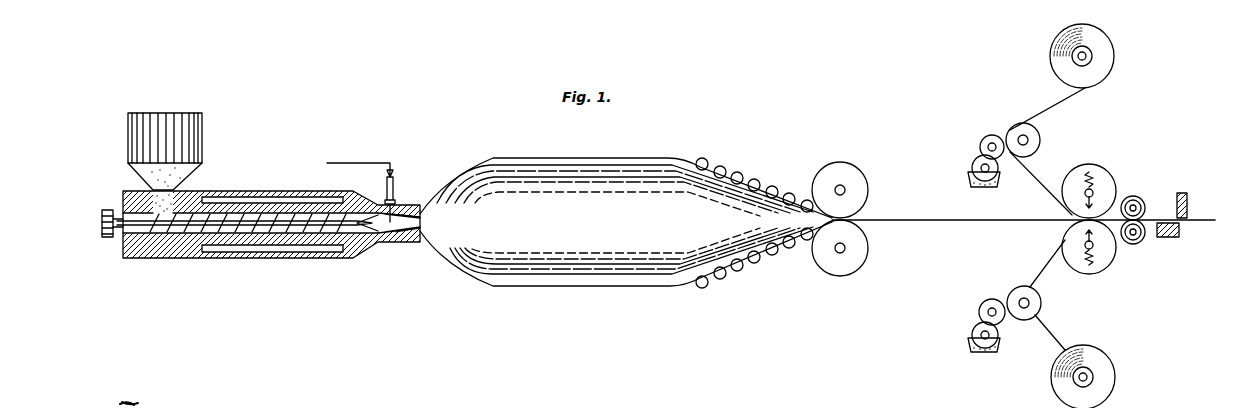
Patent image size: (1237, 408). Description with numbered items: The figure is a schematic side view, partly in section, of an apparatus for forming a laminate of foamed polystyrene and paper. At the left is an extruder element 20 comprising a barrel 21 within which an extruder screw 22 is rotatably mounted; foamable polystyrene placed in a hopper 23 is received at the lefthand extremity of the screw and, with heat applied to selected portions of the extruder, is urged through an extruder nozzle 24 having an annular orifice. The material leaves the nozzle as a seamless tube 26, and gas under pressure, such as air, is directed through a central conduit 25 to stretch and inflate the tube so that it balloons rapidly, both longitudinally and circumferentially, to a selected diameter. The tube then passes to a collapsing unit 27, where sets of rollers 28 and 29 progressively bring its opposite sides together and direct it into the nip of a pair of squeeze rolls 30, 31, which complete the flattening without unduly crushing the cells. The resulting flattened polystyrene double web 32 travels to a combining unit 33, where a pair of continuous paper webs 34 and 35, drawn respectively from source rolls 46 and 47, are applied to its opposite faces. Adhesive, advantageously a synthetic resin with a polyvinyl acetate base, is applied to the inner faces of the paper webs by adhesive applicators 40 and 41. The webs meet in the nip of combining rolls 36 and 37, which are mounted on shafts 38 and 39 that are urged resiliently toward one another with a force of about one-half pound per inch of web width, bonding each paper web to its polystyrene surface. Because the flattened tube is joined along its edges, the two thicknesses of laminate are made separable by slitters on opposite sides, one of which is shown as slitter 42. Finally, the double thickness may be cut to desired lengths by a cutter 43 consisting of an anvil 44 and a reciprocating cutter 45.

The extruder element 20 is at (261, 206).
The barrel 21 is at (190, 248).
The extruder screw 22 is at (297, 233).
The hopper 23 is at (202, 137).
The extruder nozzle 24 is at (413, 241).
The central conduit 25 is at (421, 216).
The seamless tube 26 is at (626, 236).
The collapsing unit 27 is at (754, 218).
The set of rollers 28 is at (750, 180).
The set of rollers 29 is at (755, 259).
The squeeze roll 30 is at (857, 191).
The squeeze roll 31 is at (860, 247).
The flattened polystyrene double web 32 is at (950, 221).
The combining unit 33 is at (1107, 214).
The paper web 34 is at (1038, 175).
The paper web 35 is at (1038, 263).
The combining roll 36 is at (1095, 167).
The combining roll 37 is at (1095, 268).
The shaft 38 is at (1093, 187).
The shaft 39 is at (1095, 248).
The adhesive applicator 40 is at (975, 163).
The adhesive applicator 41 is at (975, 328).
The slitter 42 is at (1156, 218).
The cutter 43 is at (1189, 210).
The anvil 44 is at (1170, 238).
The reciprocating cutter 45 is at (1185, 193).
The source roll 46 is at (1107, 57).
The source roll 47 is at (1105, 380).